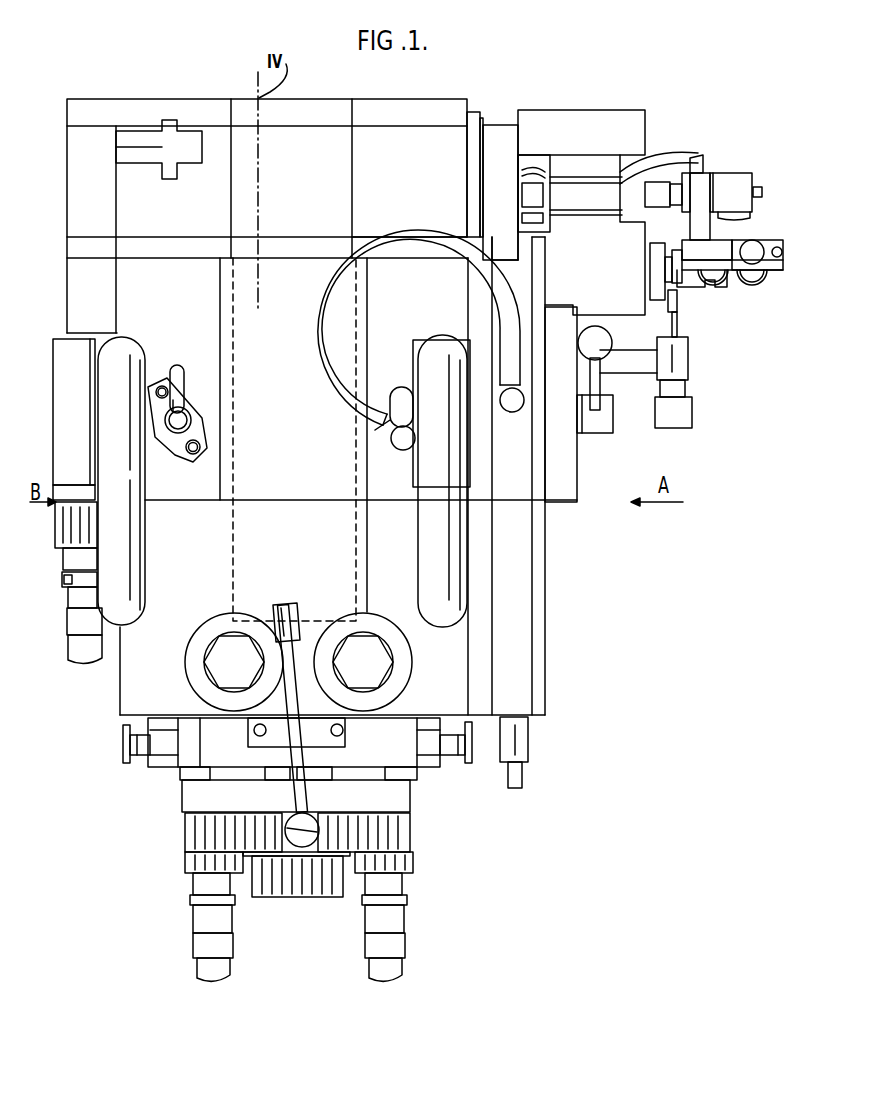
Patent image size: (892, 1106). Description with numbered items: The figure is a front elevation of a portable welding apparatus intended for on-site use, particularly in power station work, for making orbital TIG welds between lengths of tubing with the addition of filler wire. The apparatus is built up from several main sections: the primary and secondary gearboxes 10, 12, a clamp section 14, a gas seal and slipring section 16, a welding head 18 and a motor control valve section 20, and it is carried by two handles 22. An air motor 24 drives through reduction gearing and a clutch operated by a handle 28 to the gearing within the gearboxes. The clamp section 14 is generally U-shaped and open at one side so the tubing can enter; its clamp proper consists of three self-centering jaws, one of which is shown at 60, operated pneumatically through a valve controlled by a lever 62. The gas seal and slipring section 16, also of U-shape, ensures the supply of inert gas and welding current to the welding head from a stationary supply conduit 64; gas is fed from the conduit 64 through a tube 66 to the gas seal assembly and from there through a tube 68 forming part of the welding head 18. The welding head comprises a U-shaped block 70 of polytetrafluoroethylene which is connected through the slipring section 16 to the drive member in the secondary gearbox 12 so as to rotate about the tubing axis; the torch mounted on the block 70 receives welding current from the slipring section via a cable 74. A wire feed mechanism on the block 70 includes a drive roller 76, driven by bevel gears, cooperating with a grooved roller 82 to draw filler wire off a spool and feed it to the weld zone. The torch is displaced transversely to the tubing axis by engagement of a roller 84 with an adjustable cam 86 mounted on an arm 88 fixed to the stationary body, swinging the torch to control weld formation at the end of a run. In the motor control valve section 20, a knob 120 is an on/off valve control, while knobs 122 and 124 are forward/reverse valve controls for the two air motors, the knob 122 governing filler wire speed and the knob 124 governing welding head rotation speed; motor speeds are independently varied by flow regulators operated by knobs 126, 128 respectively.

The primary gearbox 10 is at (356, 407).
The secondary gearbox 12 is at (315, 147).
The clamp section 14 is at (212, 135).
The gas seal and slipring section 16 is at (430, 142).
The welding head 18 is at (762, 212).
The motor control valve section 20 is at (204, 794).
The handles 22 is at (115, 495).
The air motor 24 is at (195, 653).
The handle 28 is at (297, 785).
The self-centering jaw 60 is at (172, 180).
The lever 62 is at (180, 378).
The stationary supply conduit 64 is at (522, 743).
The tube 66 is at (423, 242).
The tube 68 is at (690, 160).
The U-shaped block 70 is at (577, 132).
The cable 74 is at (622, 199).
The drive roller 76 is at (722, 280).
The grooved roller 82 is at (757, 277).
The roller 84 is at (670, 308).
The adjustable cam 86 is at (679, 327).
The arm 88 is at (643, 363).
The knob 120 is at (312, 883).
The knob 122 is at (292, 792).
The knob 124 is at (383, 840).
The knob 126 is at (125, 750).
The knob 128 is at (472, 747).